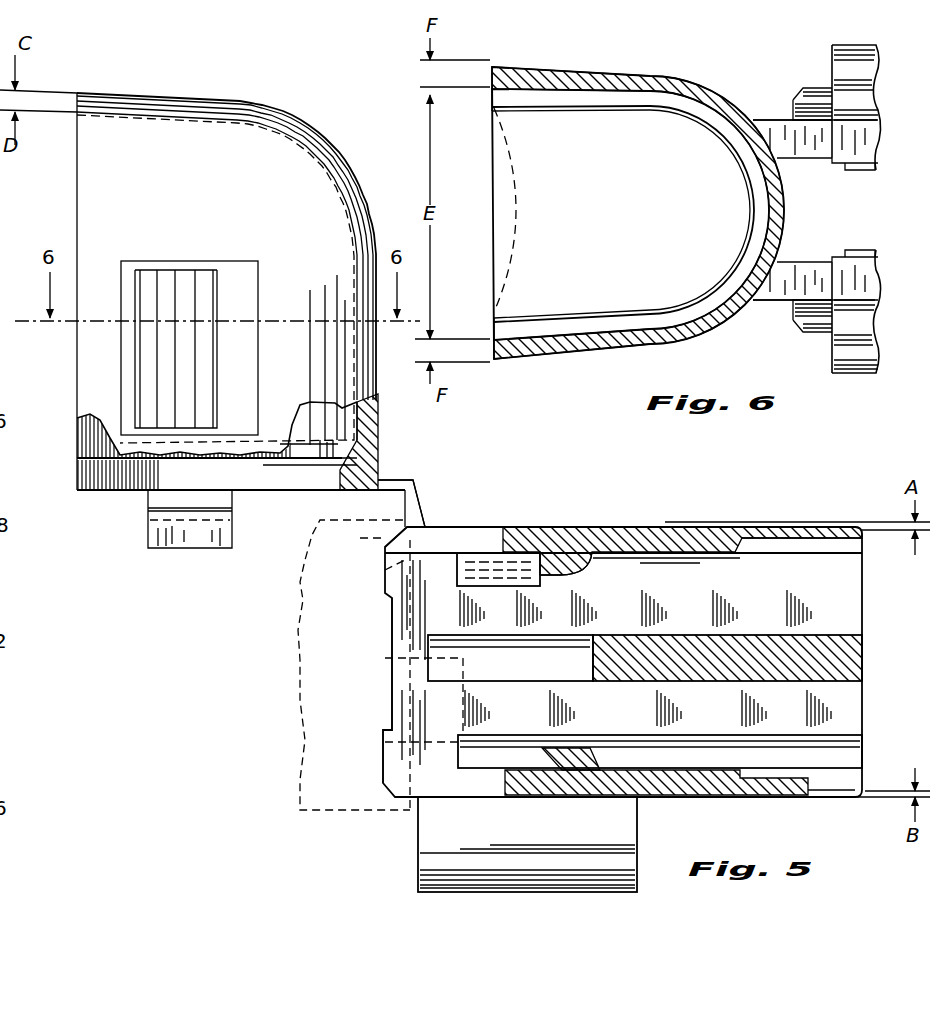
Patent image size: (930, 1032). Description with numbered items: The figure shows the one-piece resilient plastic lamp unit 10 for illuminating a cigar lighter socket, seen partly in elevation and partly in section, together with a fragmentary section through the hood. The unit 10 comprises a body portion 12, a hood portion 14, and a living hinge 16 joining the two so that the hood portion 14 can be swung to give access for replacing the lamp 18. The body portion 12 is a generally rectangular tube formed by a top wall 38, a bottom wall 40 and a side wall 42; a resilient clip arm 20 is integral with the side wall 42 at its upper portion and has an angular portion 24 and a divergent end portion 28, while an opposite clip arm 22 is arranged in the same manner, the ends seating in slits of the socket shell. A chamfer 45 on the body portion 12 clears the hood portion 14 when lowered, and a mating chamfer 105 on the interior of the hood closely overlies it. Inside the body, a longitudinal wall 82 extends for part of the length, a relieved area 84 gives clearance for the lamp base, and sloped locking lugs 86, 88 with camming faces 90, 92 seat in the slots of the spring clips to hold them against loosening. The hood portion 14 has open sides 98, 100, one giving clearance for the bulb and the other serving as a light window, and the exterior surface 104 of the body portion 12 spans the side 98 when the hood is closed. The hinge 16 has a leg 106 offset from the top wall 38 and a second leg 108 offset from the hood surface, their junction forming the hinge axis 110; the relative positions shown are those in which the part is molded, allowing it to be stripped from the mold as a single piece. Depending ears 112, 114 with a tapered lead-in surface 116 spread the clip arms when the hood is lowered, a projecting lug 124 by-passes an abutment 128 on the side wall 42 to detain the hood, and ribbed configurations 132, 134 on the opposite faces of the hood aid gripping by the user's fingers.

In FIG. 5, the lamp unit 10 is at (300, 622).
In FIG. 5, the body portion 12 is at (616, 520).
In FIG. 5, the hood portion 14 is at (295, 145).
In FIG. 6, the hood portion 14 is at (586, 308).
In FIG. 6, the living hinge 16 is at (776, 105).
In FIG. 5, the lamp 18 is at (11, 561).
In FIG. 6, the clip arm 20 is at (838, 75).
In FIG. 6, the clip arm 22 is at (838, 345).
In FIG. 5, the angular portion 24 is at (622, 818).
In FIG. 5, the divergent end portion 28 is at (541, 875).
In FIG. 5, the top wall 38 is at (645, 527).
In FIG. 5, the bottom wall 40 is at (792, 785).
In FIG. 5, the side wall 42 is at (856, 608).
In FIG. 5, the chamfer 45 is at (393, 538).
In FIG. 5, the longitudinal wall 82 is at (855, 662).
In FIG. 5, the relieved area 84 is at (530, 670).
In FIG. 5, the locking lug 86 is at (580, 578).
In FIG. 5, the locking lug 88 is at (558, 755).
In FIG. 5, the camming face 90 is at (590, 566).
In FIG. 5, the camming face 92 is at (584, 757).
In FIG. 5, the open side 98 is at (295, 485).
In FIG. 5, the open side 100 is at (85, 338).
In FIG. 5, the exterior surface 104 is at (388, 710).
In FIG. 5, the chamfer 105 is at (355, 478).
In FIG. 5, the hinge leg 106 is at (425, 516).
In FIG. 5, the hinge leg 108 is at (382, 490).
In FIG. 6, the hinge leg 108 is at (785, 160).
In FIG. 5, the hinge axis 110 is at (28, 485).
In FIG. 5, the depending ear 112 is at (160, 535).
In FIG. 5, the depending ear 114 is at (30, 492).
In FIG. 5, the tapered lead-in surface 116 is at (195, 540).
In FIG. 5, the projecting lug 124 is at (222, 513).
In FIG. 5, the abutment 128 is at (403, 703).
In FIG. 6, the ribbed configuration 132 is at (607, 70).
In FIG. 5, the ribbed configuration 134 is at (180, 272).
In FIG. 6, the ribbed configuration 134 is at (628, 343).